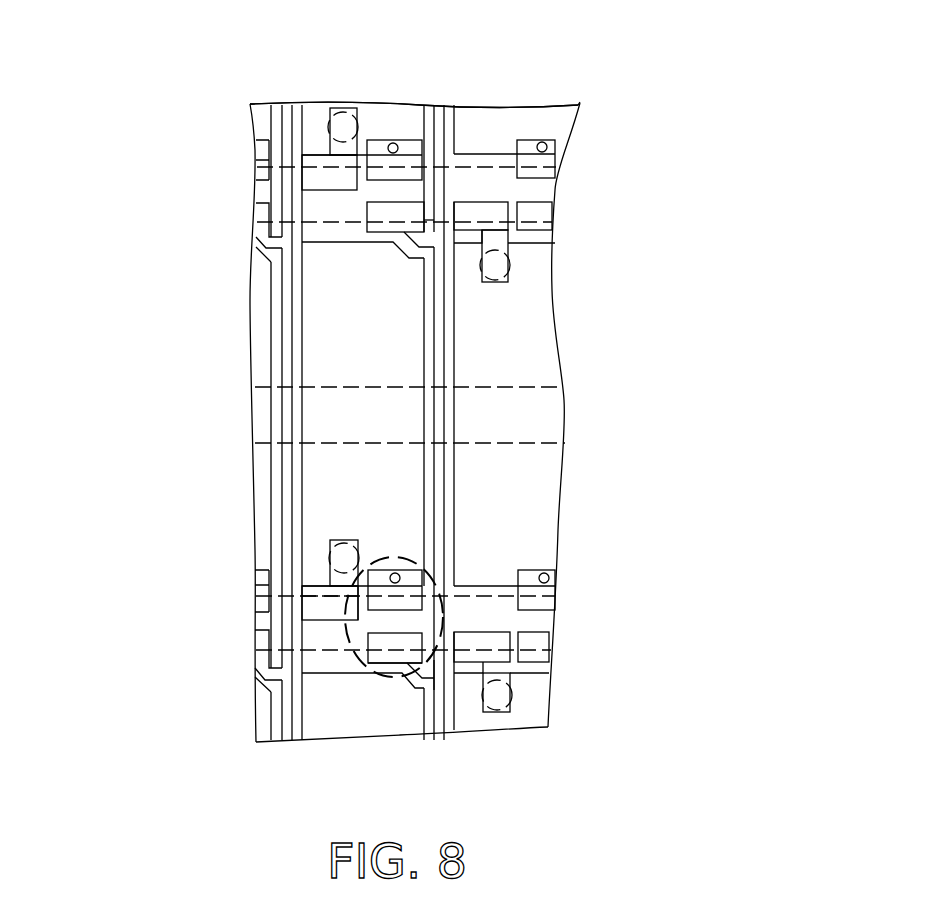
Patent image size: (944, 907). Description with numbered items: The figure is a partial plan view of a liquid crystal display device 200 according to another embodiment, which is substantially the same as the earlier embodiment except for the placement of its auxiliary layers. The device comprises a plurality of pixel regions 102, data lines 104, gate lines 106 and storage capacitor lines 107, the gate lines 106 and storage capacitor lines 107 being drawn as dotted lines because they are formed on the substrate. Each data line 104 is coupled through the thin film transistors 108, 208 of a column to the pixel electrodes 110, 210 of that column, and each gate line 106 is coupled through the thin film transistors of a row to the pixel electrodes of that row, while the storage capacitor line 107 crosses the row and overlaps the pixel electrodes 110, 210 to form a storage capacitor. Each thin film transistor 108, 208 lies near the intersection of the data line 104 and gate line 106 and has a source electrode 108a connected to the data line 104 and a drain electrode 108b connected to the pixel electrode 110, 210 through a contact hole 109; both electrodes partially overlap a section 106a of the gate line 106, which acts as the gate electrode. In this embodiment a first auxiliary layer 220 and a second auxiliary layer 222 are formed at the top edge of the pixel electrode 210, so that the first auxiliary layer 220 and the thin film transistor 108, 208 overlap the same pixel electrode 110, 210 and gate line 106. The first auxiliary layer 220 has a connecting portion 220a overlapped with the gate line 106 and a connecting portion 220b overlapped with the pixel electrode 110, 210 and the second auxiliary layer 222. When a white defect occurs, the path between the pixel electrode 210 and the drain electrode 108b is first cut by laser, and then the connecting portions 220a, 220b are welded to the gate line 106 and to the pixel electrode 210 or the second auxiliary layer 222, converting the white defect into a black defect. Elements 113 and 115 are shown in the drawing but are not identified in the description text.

The liquid crystal display device 200 is at (628, 35).
The pixel region 102 is at (295, 258).
The data line 104 is at (437, 127).
The gate line 106 is at (542, 195).
The section of the gate line 106a is at (385, 625).
The storage capacitor line 107 is at (537, 385).
The thin film transistor 108 is at (338, 691).
The thin film transistor 208 is at (358, 667).
The source electrode 108a is at (381, 668).
The drain electrode 108b is at (358, 588).
The contact hole 109 is at (388, 572).
The pixel electrode 110 is at (530, 320).
The pixel electrode 210 is at (327, 312).
The pad 113 is at (428, 580).
The connection line 115 is at (442, 672).
The first auxiliary layer 220 is at (209, 506).
The connecting portion 220a is at (318, 608).
The connecting portion 220b is at (330, 566).
The second auxiliary layer 222 is at (368, 572).